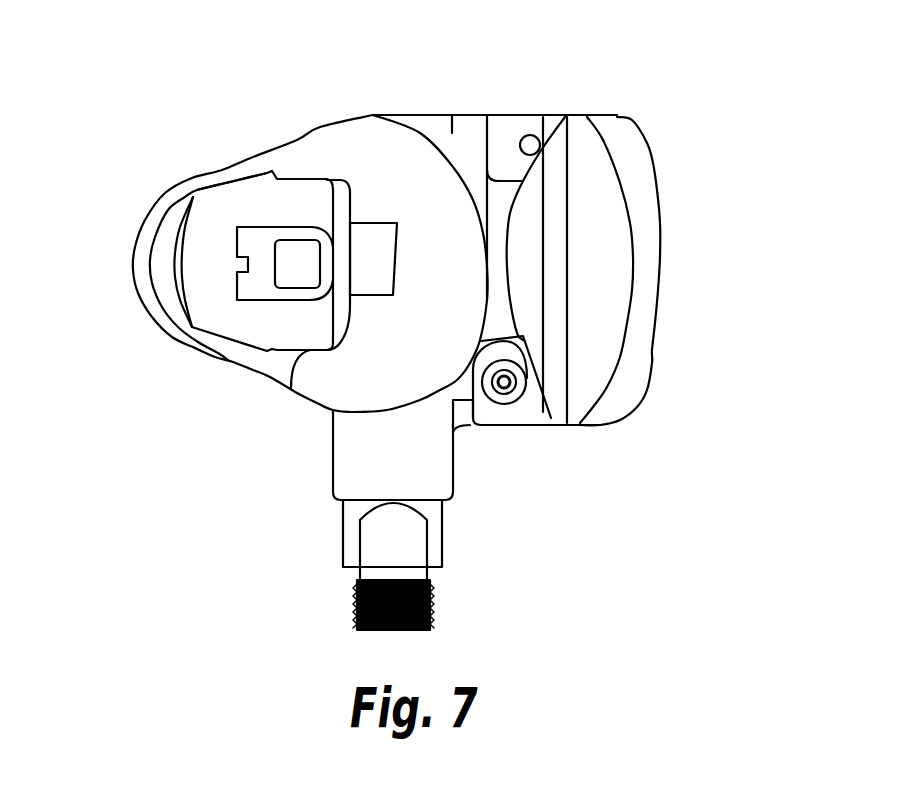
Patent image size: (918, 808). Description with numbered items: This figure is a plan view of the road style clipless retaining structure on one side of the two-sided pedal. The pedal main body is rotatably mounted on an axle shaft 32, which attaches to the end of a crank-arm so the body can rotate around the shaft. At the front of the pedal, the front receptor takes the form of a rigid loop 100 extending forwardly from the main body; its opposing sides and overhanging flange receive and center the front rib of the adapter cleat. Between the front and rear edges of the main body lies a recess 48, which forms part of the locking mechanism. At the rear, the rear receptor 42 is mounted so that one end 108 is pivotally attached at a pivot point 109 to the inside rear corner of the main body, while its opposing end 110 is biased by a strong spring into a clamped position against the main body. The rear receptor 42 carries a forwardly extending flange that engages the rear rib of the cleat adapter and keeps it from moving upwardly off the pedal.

The rigid loop 100 is at (170, 205).
The recess 48 is at (373, 233).
The opposing end of the rear receptor 110 is at (545, 118).
The rear receptor 42 is at (593, 233).
The end of the rear receptor 108 is at (545, 410).
The pivot point 109 is at (505, 382).
The axle shaft 32 is at (400, 532).